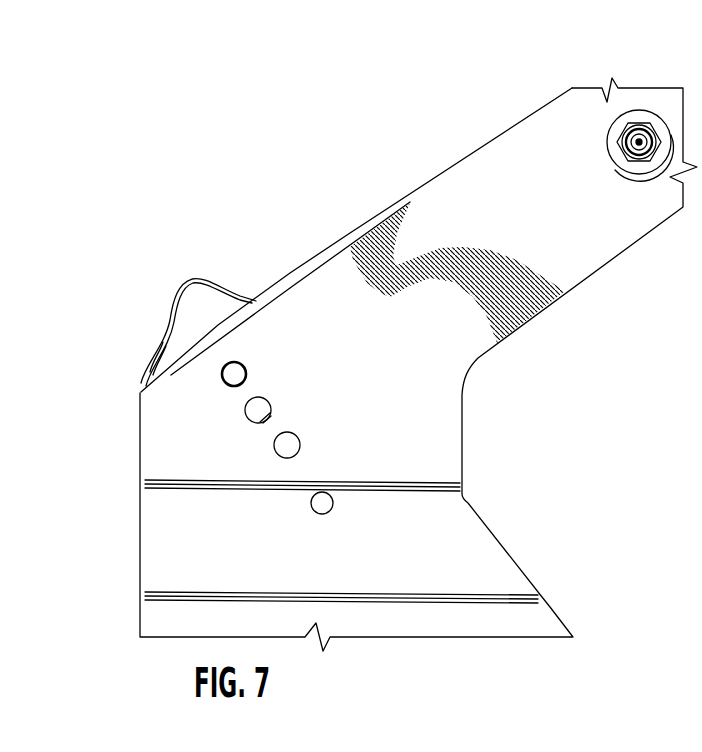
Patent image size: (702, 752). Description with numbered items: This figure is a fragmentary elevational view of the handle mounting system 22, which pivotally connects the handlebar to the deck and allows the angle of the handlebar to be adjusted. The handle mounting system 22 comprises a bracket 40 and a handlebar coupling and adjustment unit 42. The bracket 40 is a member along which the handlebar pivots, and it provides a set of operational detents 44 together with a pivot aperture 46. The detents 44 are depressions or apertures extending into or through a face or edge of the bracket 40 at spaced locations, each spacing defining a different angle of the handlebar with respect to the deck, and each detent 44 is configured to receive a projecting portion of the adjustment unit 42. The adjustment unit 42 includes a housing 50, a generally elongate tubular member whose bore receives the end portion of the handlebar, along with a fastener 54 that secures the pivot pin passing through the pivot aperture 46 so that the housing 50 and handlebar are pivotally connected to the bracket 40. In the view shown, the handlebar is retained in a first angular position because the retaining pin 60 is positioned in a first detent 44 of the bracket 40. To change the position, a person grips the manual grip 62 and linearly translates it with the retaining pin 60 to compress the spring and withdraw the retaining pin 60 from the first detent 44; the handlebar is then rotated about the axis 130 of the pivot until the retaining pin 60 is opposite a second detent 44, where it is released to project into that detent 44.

The handle mounting system 22 is at (193, 198).
The bracket 40 is at (138, 453).
The handlebar coupling and adjustment unit 42 is at (163, 283).
The detents 44 is at (221, 376).
The pivot aperture 46 is at (333, 503).
The housing 50 is at (280, 273).
The fastener 54 is at (639, 140).
The retaining pin 60 is at (233, 382).
The manual grip 62 is at (205, 298).
The axis 130 is at (639, 148).